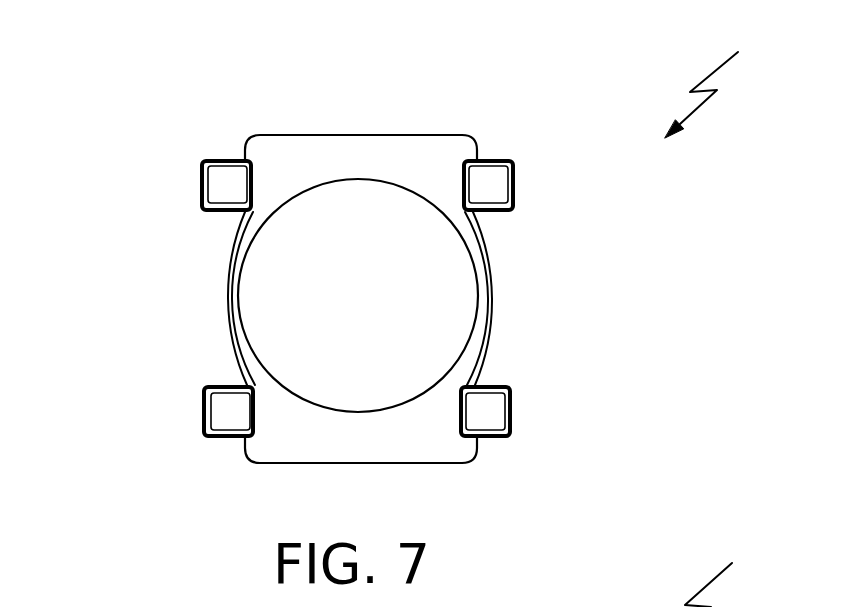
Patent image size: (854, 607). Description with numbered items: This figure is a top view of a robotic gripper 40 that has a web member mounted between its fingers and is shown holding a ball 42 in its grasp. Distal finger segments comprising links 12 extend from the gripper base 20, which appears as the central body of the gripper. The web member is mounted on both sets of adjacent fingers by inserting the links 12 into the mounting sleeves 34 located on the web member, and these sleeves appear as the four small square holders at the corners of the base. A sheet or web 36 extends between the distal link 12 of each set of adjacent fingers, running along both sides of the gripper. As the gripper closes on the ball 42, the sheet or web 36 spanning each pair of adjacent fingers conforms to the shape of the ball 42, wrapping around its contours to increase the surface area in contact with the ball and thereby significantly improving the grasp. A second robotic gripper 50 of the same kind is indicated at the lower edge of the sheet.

The distal link 12 is at (205, 200).
The gripper base 20 is at (380, 131).
The mounting sleeve 34 is at (200, 178).
The sheet or web 36 is at (225, 313).
The robotic gripper 40 is at (715, 78).
The ball 42 is at (372, 312).
The robotic gripper 50 is at (721, 569).